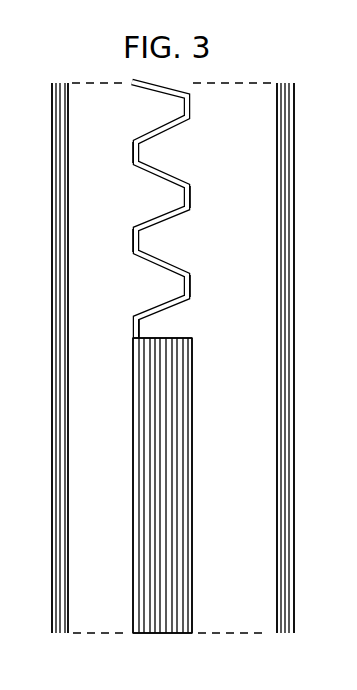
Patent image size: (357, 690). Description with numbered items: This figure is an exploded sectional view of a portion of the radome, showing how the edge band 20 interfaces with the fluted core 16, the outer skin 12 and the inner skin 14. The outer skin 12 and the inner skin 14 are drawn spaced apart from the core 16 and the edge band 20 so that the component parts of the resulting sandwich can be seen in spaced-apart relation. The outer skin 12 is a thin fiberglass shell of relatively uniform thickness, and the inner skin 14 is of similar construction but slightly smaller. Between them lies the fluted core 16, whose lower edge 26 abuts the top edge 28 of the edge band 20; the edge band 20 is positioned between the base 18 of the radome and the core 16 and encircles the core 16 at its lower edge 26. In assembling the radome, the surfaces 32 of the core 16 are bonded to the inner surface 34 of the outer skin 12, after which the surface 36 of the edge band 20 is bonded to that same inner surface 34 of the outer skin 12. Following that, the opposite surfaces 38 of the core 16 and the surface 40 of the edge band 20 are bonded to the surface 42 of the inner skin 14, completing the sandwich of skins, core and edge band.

The outer skin 12 is at (295, 422).
The inner skin 14 is at (52, 405).
The fluted core 16 is at (175, 172).
The base 18 is at (189, 634).
The edge band 20 is at (192, 402).
The lower edge 26 is at (140, 332).
The top edge 28 is at (178, 338).
The surfaces 32 is at (192, 205).
The inner surface 34 is at (278, 270).
The surface 36 is at (192, 468).
The opposite surfaces 38 is at (133, 230).
The surface 40 is at (133, 457).
The surface 42 is at (67, 283).